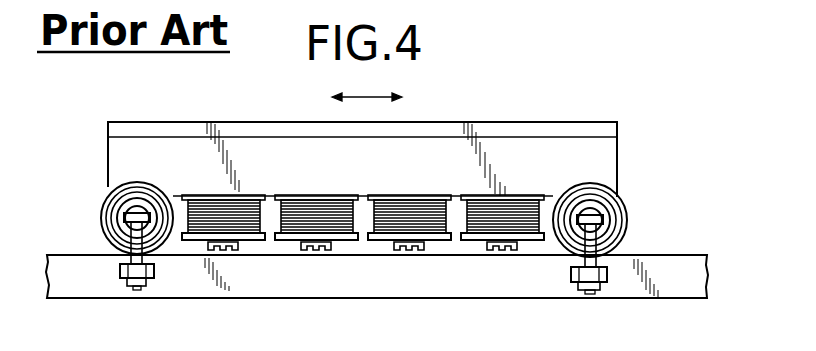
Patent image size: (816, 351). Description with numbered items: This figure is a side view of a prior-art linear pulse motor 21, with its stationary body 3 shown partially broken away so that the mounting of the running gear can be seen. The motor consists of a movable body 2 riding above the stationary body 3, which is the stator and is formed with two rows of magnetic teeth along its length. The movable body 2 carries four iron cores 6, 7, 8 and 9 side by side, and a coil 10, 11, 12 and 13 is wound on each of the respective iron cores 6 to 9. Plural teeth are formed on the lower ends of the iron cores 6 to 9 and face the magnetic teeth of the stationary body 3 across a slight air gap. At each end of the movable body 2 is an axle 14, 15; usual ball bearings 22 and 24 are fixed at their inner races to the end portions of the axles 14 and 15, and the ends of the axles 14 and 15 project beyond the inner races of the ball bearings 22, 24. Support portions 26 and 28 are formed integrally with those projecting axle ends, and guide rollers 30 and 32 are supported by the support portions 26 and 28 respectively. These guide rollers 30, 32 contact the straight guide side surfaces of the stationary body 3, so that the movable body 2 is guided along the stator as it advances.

The movable body 2 is at (313, 151).
The linear pulse motor 21 is at (221, 114).
The stationary body 3 is at (543, 282).
The iron core 6 is at (207, 250).
The iron core 7 is at (300, 250).
The iron core 8 is at (394, 250).
The iron core 9 is at (484, 250).
The coil 10 is at (245, 225).
The coil 11 is at (338, 225).
The coil 12 is at (433, 225).
The coil 13 is at (527, 225).
The axle 14 is at (140, 208).
The axle 15 is at (598, 203).
The ball bearing 22 is at (108, 230).
The ball bearing 24 is at (628, 228).
The support portion 26 is at (146, 211).
The support portion 28 is at (576, 218).
The guide roller 30 is at (118, 272).
The guide roller 32 is at (607, 277).